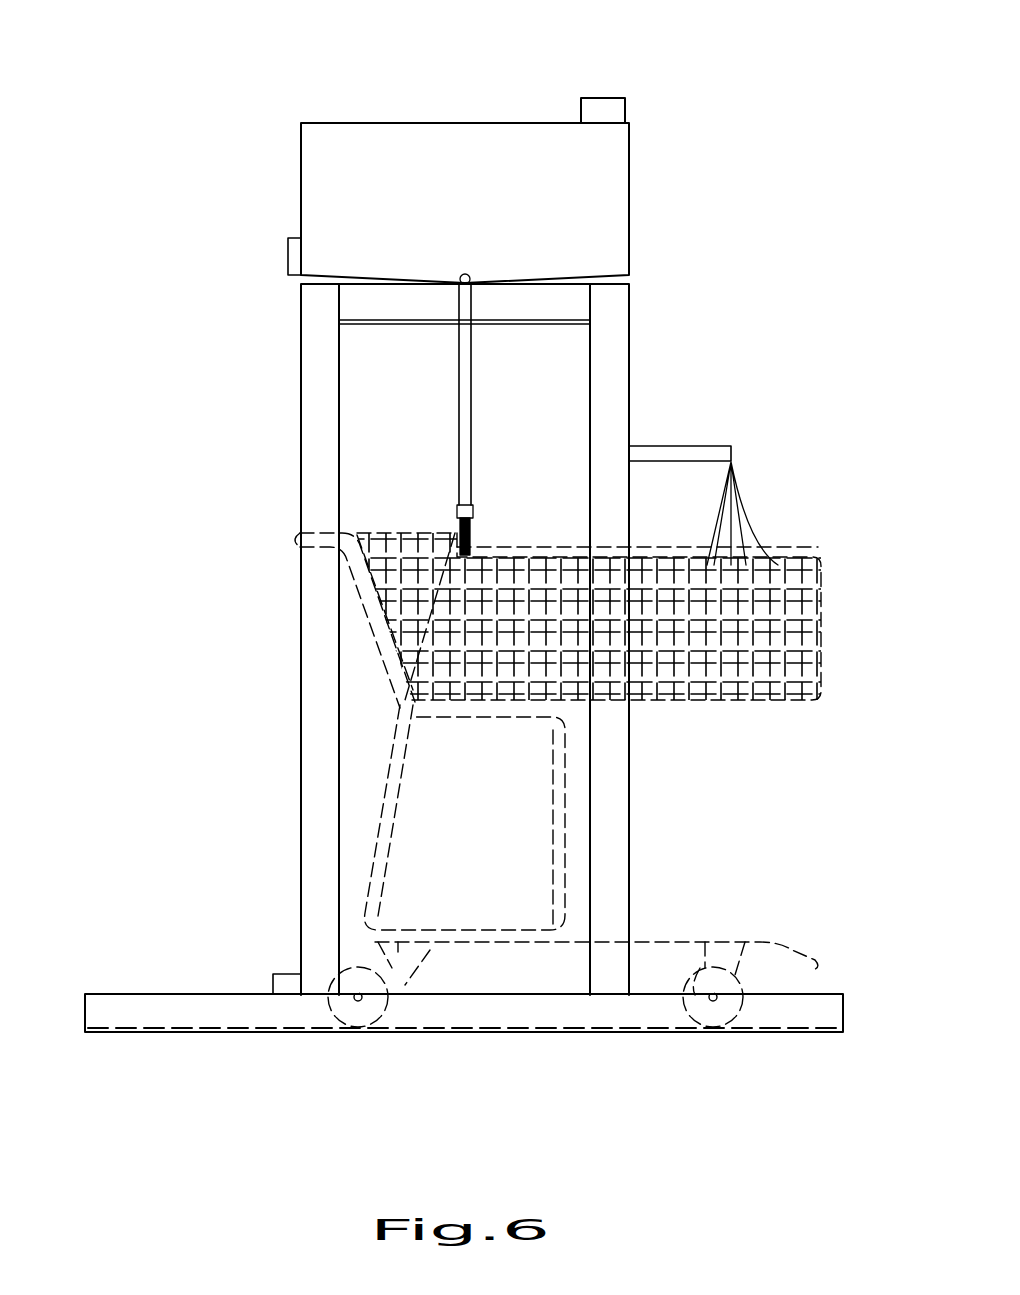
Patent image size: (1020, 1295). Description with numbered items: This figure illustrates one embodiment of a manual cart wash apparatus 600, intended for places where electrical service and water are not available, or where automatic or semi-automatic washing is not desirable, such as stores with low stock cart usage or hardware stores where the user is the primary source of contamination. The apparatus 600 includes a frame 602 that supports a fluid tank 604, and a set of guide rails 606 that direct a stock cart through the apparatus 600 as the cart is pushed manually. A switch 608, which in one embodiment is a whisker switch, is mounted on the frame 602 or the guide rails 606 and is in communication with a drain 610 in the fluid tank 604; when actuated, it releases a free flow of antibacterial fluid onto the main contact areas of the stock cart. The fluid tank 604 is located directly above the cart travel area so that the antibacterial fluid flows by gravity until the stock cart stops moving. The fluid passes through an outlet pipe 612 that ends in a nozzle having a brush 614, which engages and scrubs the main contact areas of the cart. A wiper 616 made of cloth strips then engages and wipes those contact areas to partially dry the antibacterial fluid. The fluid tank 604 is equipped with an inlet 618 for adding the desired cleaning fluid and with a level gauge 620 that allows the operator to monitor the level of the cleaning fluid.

The manual cart wash apparatus 600 is at (222, 540).
The frame 602 is at (318, 807).
The fluid tank 604 is at (597, 177).
The guide rails 606 is at (135, 1010).
The switch 608 is at (278, 990).
The drain 610 is at (465, 274).
The outlet pipe 612 is at (472, 400).
The brush 614 is at (458, 520).
The wiper 616 is at (740, 524).
The inlet 618 is at (603, 98).
The level gauge 620 is at (288, 258).